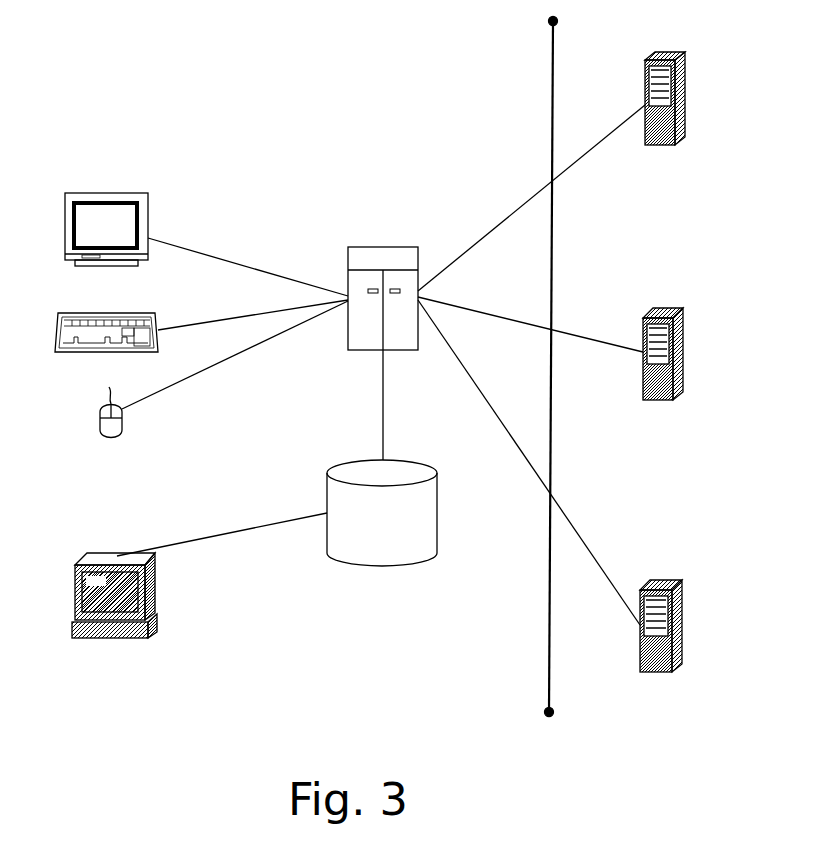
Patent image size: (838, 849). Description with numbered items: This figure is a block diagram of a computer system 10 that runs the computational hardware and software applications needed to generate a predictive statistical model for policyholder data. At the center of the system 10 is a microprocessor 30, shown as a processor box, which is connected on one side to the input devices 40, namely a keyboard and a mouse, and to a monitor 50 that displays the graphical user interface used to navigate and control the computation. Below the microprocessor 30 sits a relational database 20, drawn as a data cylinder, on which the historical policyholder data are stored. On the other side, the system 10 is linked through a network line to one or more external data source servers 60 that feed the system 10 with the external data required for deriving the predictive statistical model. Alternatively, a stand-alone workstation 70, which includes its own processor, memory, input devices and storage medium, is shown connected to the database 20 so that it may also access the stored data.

The computer system 10 is at (274, 118).
The relational database 20 is at (382, 567).
The microprocessor 30 is at (383, 247).
The input devices 40 is at (55, 333).
The monitor 50 is at (107, 192).
The external data source servers 60 is at (680, 98).
The stand-alone workstation 70 is at (118, 636).